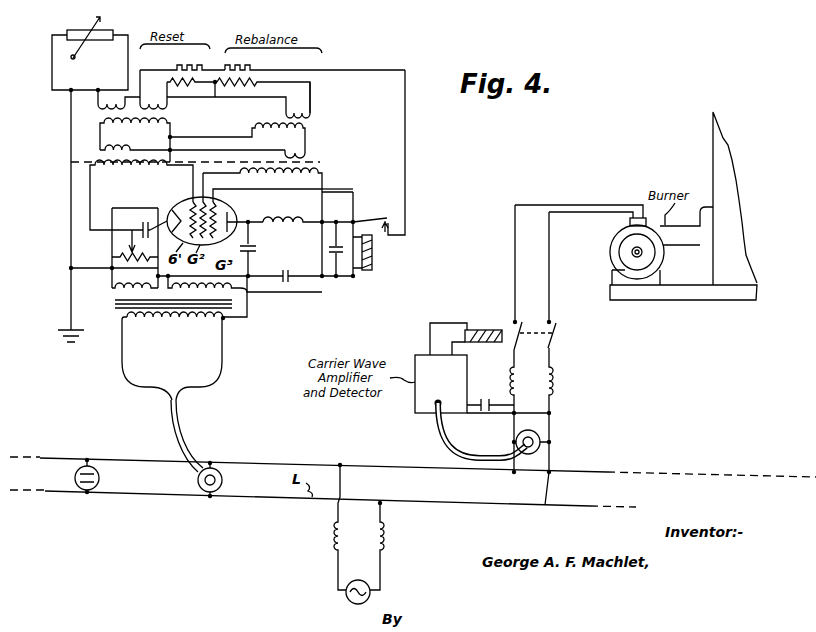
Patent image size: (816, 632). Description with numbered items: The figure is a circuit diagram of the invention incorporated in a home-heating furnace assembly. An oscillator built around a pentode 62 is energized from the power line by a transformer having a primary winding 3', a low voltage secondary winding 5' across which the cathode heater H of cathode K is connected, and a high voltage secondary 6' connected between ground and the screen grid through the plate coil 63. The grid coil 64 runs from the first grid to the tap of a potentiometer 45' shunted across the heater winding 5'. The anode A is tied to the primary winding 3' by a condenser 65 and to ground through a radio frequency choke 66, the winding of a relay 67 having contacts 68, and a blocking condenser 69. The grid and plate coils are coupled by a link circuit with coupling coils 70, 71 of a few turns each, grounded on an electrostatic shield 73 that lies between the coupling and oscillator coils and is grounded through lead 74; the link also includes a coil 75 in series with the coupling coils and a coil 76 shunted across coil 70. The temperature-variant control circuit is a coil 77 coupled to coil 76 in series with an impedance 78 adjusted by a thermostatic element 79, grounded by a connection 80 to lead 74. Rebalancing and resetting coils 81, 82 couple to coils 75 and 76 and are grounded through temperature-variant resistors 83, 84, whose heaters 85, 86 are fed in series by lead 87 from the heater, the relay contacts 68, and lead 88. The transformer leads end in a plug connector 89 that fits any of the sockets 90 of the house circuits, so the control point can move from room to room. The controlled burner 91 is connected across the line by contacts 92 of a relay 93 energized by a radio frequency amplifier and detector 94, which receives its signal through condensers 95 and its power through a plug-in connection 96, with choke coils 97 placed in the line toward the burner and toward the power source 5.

The impedance 78 is at (78, 33).
The thermostatic element 79 is at (78, 57).
The coil 77 is at (112, 95).
The coil 82 is at (167, 105).
The temperature-variant resistor 84 is at (181, 86).
The temperature-variant resistor 83 is at (235, 86).
The heater 86 is at (183, 70).
The heater 85 is at (258, 70).
The lead 88 is at (405, 158).
The coil 81 is at (312, 113).
The coil 76 is at (100, 125).
The coupling coil 70 is at (100, 150).
The coil 75 is at (312, 130).
The coupling coil 71 is at (312, 153).
The electrostatic shield 73 is at (325, 163).
The lead 87 is at (353, 194).
The grid coil 64 is at (137, 175).
The connection 80 is at (71, 130).
The lead 74 is at (71, 196).
The pentode 62 is at (238, 211).
The cathode K is at (165, 211).
The heater H is at (152, 224).
The plate coil 63 is at (277, 191).
The anode A is at (245, 229).
The potentiometer 45' is at (116, 248).
The low voltage secondary winding 5' is at (120, 294).
The high voltage secondary 6' is at (245, 295).
The primary winding 3' is at (184, 338).
The plug connector 89 is at (204, 491).
The radio frequency choke 66 is at (291, 231).
The condenser 65 is at (256, 241).
The blocking condenser 69 is at (283, 274).
The relay 67 is at (374, 261).
The contacts 68 is at (398, 221).
The relay 93 is at (485, 329).
The radio frequency amplifier and detector 94 is at (467, 368).
The contacts 92 is at (523, 321).
The choke coils 97 is at (518, 392).
The condensers 95 is at (489, 416).
The plug-in connection 96 is at (540, 446).
The sockets 90 is at (99, 479).
The alternating current source 5 is at (356, 602).
The burner 91 is at (612, 248).